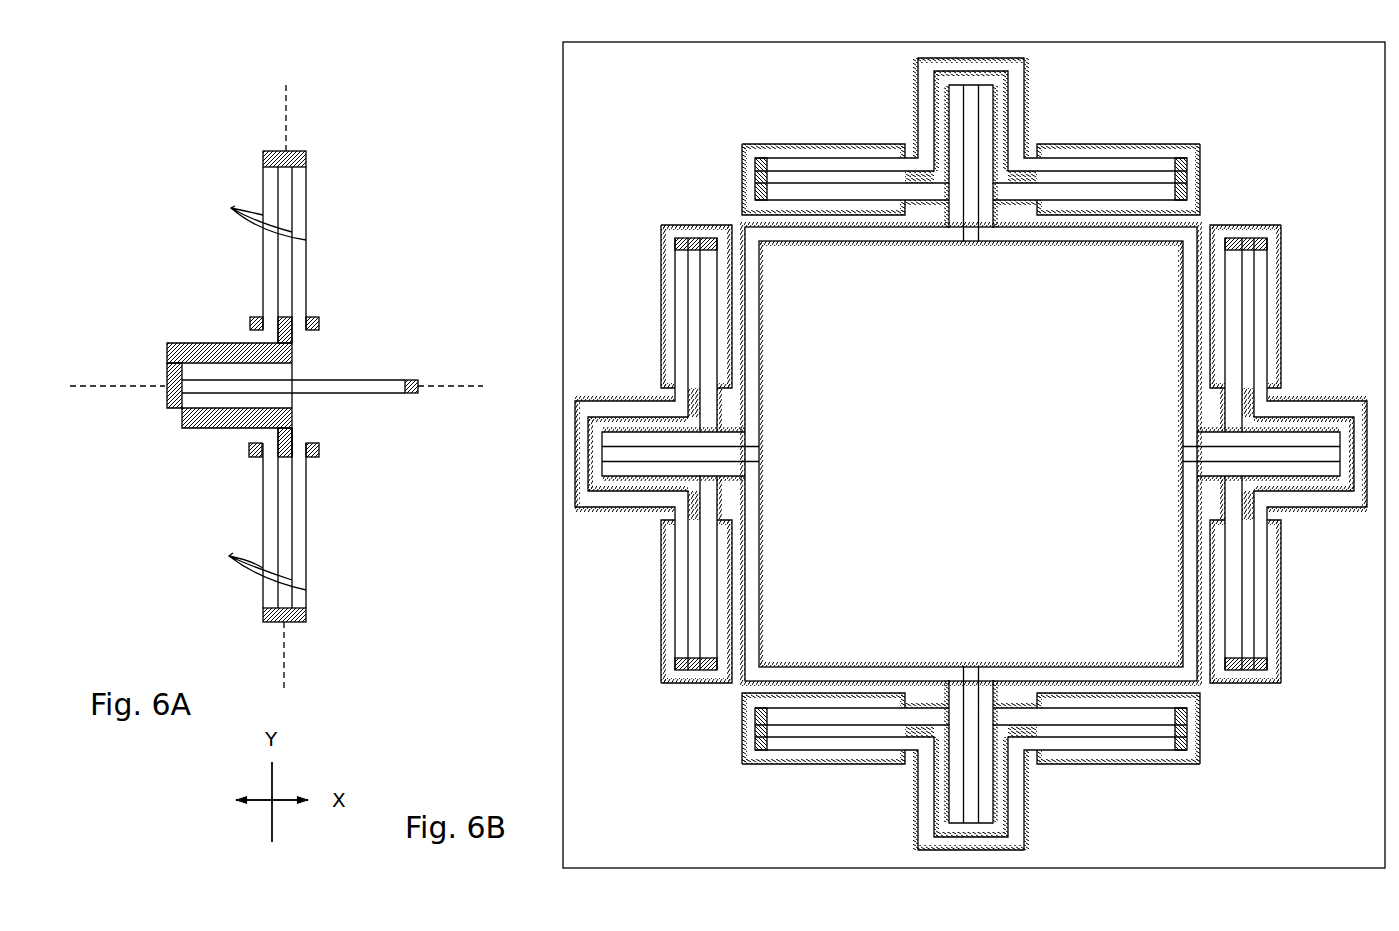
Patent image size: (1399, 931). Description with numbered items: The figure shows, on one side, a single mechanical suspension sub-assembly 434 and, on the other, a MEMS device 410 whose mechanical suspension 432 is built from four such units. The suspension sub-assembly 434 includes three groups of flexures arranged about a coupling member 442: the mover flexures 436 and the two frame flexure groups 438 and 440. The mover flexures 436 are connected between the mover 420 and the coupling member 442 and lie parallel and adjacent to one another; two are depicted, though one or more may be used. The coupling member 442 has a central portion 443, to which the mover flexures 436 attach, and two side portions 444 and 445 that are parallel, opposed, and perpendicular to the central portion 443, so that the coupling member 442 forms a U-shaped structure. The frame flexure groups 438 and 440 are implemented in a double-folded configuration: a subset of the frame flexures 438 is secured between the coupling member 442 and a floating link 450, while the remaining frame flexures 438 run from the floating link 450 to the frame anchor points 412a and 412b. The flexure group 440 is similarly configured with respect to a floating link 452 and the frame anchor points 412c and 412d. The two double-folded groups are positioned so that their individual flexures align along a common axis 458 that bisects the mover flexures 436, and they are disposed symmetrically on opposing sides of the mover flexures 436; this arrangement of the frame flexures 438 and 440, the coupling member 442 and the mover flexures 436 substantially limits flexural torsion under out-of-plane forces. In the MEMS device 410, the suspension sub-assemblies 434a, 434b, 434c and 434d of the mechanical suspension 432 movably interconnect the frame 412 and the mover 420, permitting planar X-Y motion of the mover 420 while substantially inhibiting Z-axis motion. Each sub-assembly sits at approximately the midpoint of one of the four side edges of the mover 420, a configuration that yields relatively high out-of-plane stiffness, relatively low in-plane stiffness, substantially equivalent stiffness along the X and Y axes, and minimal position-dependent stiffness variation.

In FIG. 6B, the MEMS device 410 is at (532, 83).
In FIG. 6B, the frame 412 is at (563, 566).
In FIG. 6A, the frame anchor point 412a is at (249, 447).
In FIG. 6A, the frame anchor point 412b is at (374, 440).
In FIG. 6A, the frame anchor point 412c is at (250, 324).
In FIG. 6A, the frame anchor point 412d is at (374, 311).
In FIG. 6A, the mover 420 is at (411, 396).
In FIG. 6B, the mover 420 is at (757, 652).
In FIG. 6B, the mechanical suspension 432 is at (677, 163).
In FIG. 6A, the suspension sub-assembly 434 is at (141, 219).
In FIG. 6B, the suspension sub-assembly 434a is at (633, 380).
In FIG. 6B, the suspension sub-assembly 434b is at (894, 124).
In FIG. 6B, the suspension sub-assembly 434c is at (1302, 372).
In FIG. 6B, the suspension sub-assembly 434d is at (885, 791).
In FIG. 6A, the mover flexures 436 is at (350, 386).
In FIG. 6A, the frame flexures 438 is at (256, 559).
In FIG. 6A, the frame flexures 440 is at (259, 209).
In FIG. 6A, the coupling member 442 is at (164, 363).
In FIG. 6A, the central portion 443 is at (167, 402).
In FIG. 6A, the side portion 444 is at (200, 428).
In FIG. 6A, the side portion 445 is at (203, 342).
In FIG. 6A, the floating link 450 is at (262, 615).
In FIG. 6A, the floating link 452 is at (263, 156).
In FIG. 6A, the common axis 458 is at (285, 122).